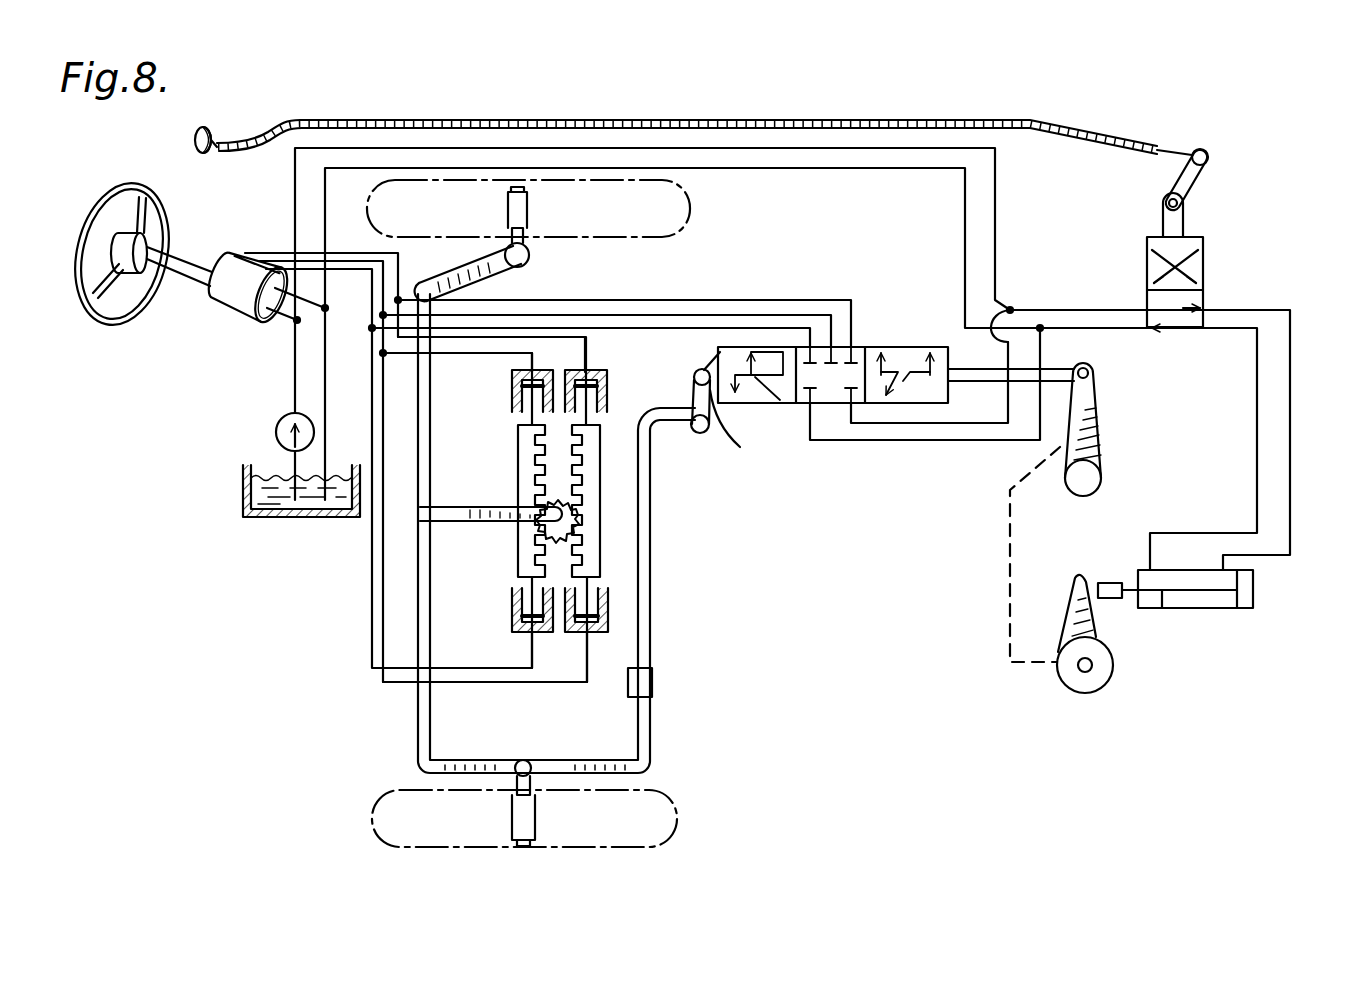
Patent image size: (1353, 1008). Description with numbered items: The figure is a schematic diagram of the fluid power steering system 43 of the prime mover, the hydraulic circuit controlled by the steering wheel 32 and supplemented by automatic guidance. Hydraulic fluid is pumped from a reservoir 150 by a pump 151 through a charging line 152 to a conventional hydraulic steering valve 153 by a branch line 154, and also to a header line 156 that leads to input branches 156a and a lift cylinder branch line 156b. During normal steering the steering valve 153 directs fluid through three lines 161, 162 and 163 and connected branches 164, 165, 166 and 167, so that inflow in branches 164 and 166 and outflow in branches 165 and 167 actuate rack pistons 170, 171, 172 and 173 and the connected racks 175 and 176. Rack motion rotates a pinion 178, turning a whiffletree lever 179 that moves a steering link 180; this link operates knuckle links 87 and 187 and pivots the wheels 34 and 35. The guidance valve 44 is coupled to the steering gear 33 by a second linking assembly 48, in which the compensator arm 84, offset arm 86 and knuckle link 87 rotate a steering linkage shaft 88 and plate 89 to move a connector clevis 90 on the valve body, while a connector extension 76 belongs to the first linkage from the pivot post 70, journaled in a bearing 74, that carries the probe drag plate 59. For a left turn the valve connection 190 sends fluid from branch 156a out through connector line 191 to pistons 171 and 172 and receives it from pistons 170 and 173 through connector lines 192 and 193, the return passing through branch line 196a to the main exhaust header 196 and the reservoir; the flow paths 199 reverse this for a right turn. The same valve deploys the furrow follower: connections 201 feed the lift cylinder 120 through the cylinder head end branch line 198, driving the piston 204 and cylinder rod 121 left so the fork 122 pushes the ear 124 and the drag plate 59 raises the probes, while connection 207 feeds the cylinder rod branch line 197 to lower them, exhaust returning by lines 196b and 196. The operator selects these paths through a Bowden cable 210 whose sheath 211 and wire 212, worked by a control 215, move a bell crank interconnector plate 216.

The steering wheel 32 is at (150, 150).
The steering gear 33 is at (400, 745).
The wheel 34 is at (592, 848).
The wheel 35 is at (690, 214).
The fluid power steering system 43 is at (355, 585).
The guidance valve 44 is at (860, 342).
The second linking assembly 48 is at (658, 640).
The probe drag plate 59 is at (1086, 694).
The pivot post 70 is at (1100, 478).
The bearing 74 is at (1105, 400).
The connector extension 76 is at (1078, 370).
The compensator arm 84 is at (645, 560).
The offset arm 86 is at (662, 422).
The steering knuckle link 87 is at (590, 760).
The steering linkage shaft 88 is at (700, 434).
The steering linkage plate 89 is at (702, 369).
The connector clevis 90 is at (742, 425).
The lift cylinder 120 is at (1232, 610).
The cylinder rod 121 is at (1130, 586).
The fork 122 is at (1102, 582).
The ear 124 is at (1070, 593).
The reservoir 150 is at (257, 520).
The pump 151 is at (272, 432).
The charging line 152 is at (290, 368).
The hydraulic steering valve 153 is at (230, 302).
The branch line 154 is at (272, 318).
The header line 156 is at (290, 165).
The input branch 156a is at (998, 302).
The lift cylinder branch line 156b is at (1073, 308).
The line 161 is at (282, 250).
The line 162 is at (270, 262).
The line 163 is at (366, 236).
The branch 164 is at (372, 667).
The branch 165 is at (382, 683).
The branch 166 is at (512, 355).
The branch 167 is at (562, 400).
The rack piston 170 is at (530, 607).
The rack piston 171 is at (600, 612).
The rack piston 172 is at (513, 417).
The rack piston 173 is at (592, 374).
The rack 175 is at (528, 538).
The rack 176 is at (600, 530).
The pinion 178 is at (578, 496).
The whiffletree lever 179 is at (448, 522).
The steering link 180 is at (420, 485).
The knuckle link 187 is at (490, 216).
The valve connection 190 is at (766, 412).
The automatic steering connector line 191 is at (717, 270).
The automatic steering connector line 192 is at (620, 327).
The automatic steering connector line 193 is at (752, 300).
The main exhaust header 196 is at (655, 168).
The branch line 196a is at (975, 442).
The lift cylinder branch exhaust line 196b is at (1128, 330).
The cylinder rod branch line 197 is at (1258, 390).
The cylinder head end branch line 198 is at (1291, 447).
The fluid flow path 199 is at (904, 412).
The valve connection 201 is at (1207, 305).
The cylinder piston 204 is at (1162, 610).
The valve connection 207 is at (1205, 262).
The Bowden cable 210 is at (514, 117).
The sheath 211 is at (1115, 85).
The wire 212 is at (1190, 117).
The control 215 is at (231, 125).
The bell crank interconnector plate 216 is at (1205, 181).